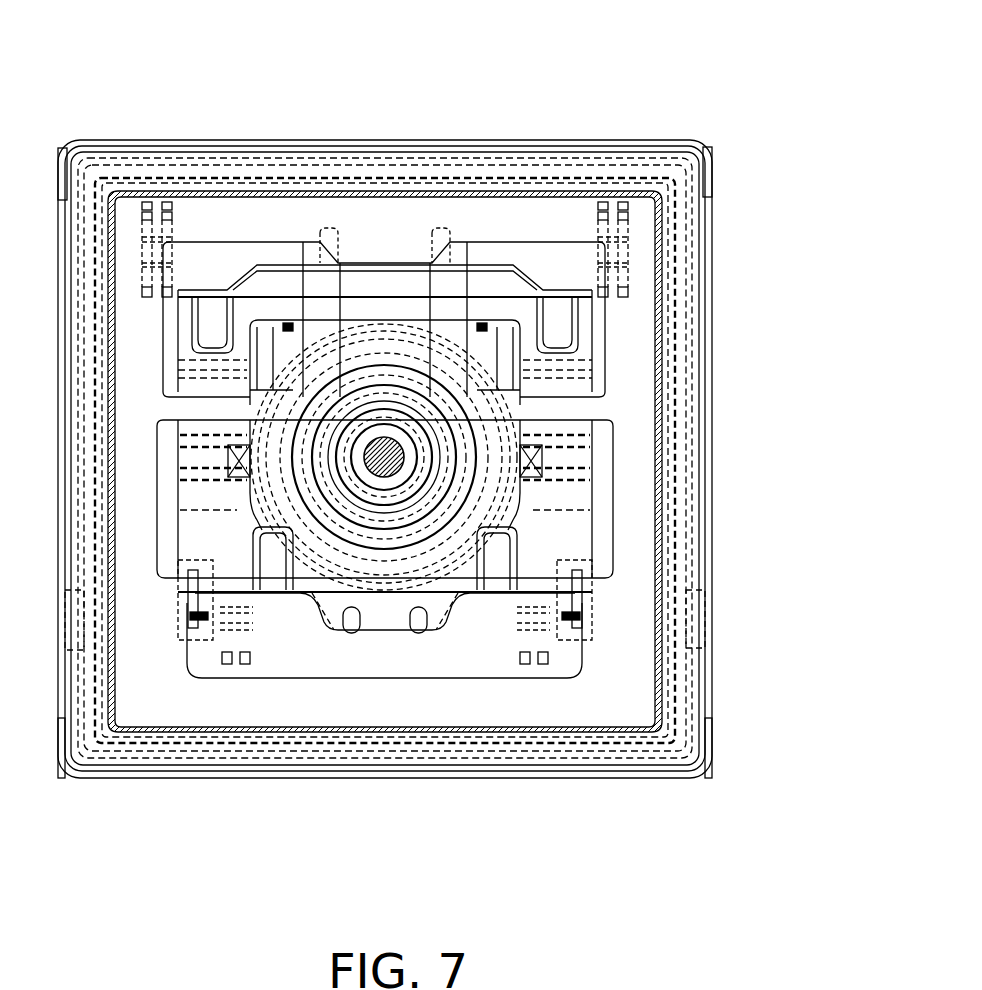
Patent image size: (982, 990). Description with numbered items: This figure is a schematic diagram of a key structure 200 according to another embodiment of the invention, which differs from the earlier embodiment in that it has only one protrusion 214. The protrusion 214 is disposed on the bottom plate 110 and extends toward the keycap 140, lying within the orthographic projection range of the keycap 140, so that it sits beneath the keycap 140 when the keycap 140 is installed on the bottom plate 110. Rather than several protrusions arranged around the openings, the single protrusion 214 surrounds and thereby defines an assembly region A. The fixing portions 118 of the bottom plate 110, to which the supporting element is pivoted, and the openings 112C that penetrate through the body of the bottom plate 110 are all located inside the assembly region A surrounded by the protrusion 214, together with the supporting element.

The key structure 200 is at (726, 116).
The keycap 140 is at (712, 455).
The bottom plate 110 is at (668, 218).
The assembly region A is at (668, 370).
The protrusion 214 is at (542, 195).
The fixing portions 118 is at (395, 330).
The openings 112C is at (550, 520).